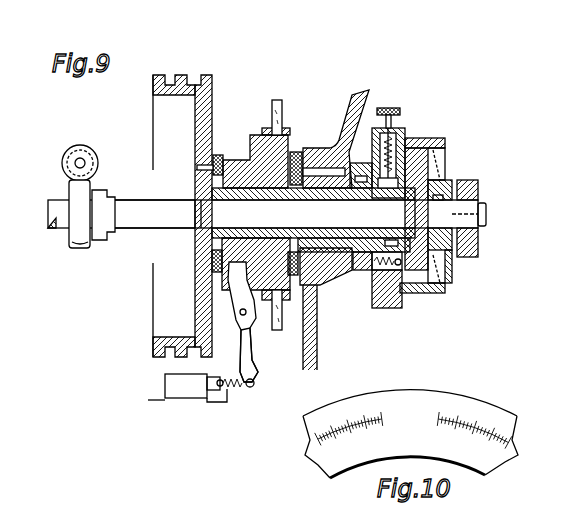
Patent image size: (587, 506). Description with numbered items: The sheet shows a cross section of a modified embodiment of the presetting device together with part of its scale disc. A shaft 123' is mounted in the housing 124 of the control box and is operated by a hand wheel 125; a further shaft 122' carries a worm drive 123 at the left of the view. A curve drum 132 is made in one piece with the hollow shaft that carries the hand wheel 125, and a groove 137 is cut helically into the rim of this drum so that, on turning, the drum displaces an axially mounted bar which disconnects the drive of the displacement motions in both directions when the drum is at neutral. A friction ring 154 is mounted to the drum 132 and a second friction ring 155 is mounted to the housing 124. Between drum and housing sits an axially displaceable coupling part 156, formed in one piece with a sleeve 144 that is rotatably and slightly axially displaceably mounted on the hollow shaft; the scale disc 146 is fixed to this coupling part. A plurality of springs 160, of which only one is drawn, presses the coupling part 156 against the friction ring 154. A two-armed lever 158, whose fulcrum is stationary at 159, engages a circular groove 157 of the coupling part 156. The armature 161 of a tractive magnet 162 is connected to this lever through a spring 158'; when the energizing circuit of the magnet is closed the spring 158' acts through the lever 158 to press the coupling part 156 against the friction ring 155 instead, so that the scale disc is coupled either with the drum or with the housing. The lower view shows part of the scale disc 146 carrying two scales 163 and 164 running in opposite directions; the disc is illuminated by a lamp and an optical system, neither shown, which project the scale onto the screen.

In FIG. 9, the shaft 122' is at (90, 171).
In FIG. 9, the worm drive 123 is at (118, 193).
In FIG. 9, the shaft 123' is at (149, 238).
In FIG. 9, the housing 124 is at (355, 98).
In FIG. 9, the hand wheel 125 is at (440, 140).
In FIG. 9, the curve drum 132 is at (210, 78).
In FIG. 9, the groove 137 is at (199, 78).
In FIG. 9, the sleeve 144 is at (325, 190).
In FIG. 9, the scale disc 146 is at (278, 98).
In FIG. 10, the scale disc 146 is at (412, 416).
In FIG. 9, the friction ring 154 is at (218, 155).
In FIG. 9, the friction ring 155 is at (298, 155).
In FIG. 9, the coupling part 156 is at (290, 150).
In FIG. 9, the circular groove 157 is at (240, 160).
In FIG. 9, the two-armed lever 158 is at (273, 364).
In FIG. 9, the spring 158' is at (229, 370).
In FIG. 9, the fulcrum 159 is at (246, 316).
In FIG. 9, the springs 160 is at (388, 308).
In FIG. 9, the armature 161 is at (220, 392).
In FIG. 9, the tractive magnet 162 is at (187, 388).
In FIG. 10, the scale 163 is at (459, 416).
In FIG. 10, the scale 164 is at (362, 415).